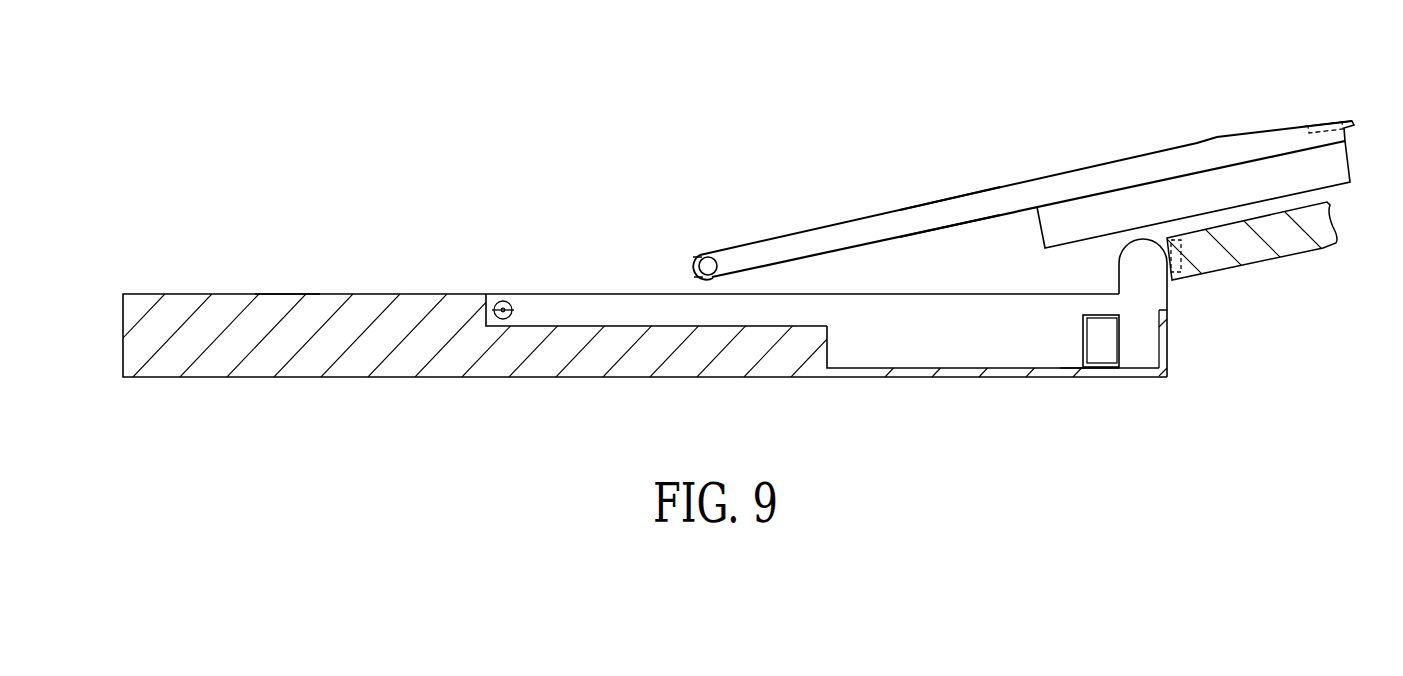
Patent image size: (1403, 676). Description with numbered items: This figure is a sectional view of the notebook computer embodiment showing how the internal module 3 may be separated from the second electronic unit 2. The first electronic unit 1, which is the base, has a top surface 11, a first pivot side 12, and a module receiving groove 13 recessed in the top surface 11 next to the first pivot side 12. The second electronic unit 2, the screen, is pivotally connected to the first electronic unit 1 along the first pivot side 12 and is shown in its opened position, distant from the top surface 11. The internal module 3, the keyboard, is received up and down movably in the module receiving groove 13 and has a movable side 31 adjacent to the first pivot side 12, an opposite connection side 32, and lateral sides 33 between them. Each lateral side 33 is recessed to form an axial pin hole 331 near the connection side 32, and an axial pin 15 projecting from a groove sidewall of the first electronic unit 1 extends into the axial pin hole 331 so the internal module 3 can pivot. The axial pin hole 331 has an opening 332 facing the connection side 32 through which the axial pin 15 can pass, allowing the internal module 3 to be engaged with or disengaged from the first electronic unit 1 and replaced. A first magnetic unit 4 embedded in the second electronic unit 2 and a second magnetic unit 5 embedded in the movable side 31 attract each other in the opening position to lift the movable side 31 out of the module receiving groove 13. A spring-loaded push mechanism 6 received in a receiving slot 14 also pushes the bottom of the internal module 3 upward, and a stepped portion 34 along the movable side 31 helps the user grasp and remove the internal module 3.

The first electronic unit 1 is at (150, 341).
The top surface 11 is at (293, 294).
The first pivot side 12 is at (1167, 348).
The module receiving groove 13 is at (832, 367).
The receiving slot 14 is at (1082, 340).
The axial pin 15 is at (505, 302).
The second electronic unit 2 is at (1290, 242).
The internal module 3 is at (860, 232).
The movable side 31 is at (1348, 135).
The connection side 32 is at (481, 310).
The lateral side 33 is at (948, 212).
The axial pin hole 331 is at (705, 257).
The opening 332 is at (690, 267).
The stepped portion 34 is at (1353, 119).
The first magnetic unit 4 is at (1181, 257).
The second magnetic unit 5 is at (1322, 123).
The spring-loaded push mechanism 6 is at (1102, 348).